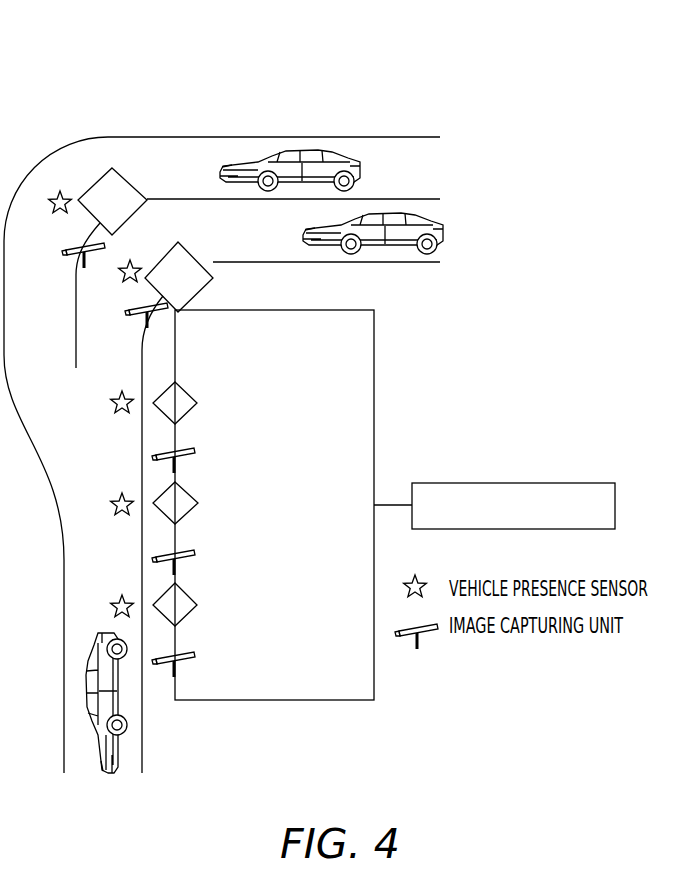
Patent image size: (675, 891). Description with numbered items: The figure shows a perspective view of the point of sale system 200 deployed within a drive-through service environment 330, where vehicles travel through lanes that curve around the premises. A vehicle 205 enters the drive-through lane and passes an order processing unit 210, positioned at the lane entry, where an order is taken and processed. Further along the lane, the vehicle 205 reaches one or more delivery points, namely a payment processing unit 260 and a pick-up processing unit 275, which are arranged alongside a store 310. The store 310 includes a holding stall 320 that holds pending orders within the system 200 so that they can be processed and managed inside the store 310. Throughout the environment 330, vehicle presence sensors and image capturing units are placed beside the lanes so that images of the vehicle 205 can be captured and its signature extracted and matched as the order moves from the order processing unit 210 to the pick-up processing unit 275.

The point of sale system 200 is at (332, 95).
The vehicle 205 is at (86, 690).
The order processing unit 210 is at (128, 179).
The payment processing unit 260 is at (187, 391).
The pick-up processing unit 275 is at (187, 491).
The store 310 is at (375, 384).
The holding stall 320 is at (513, 483).
The drive-through service environment 330 is at (442, 168).